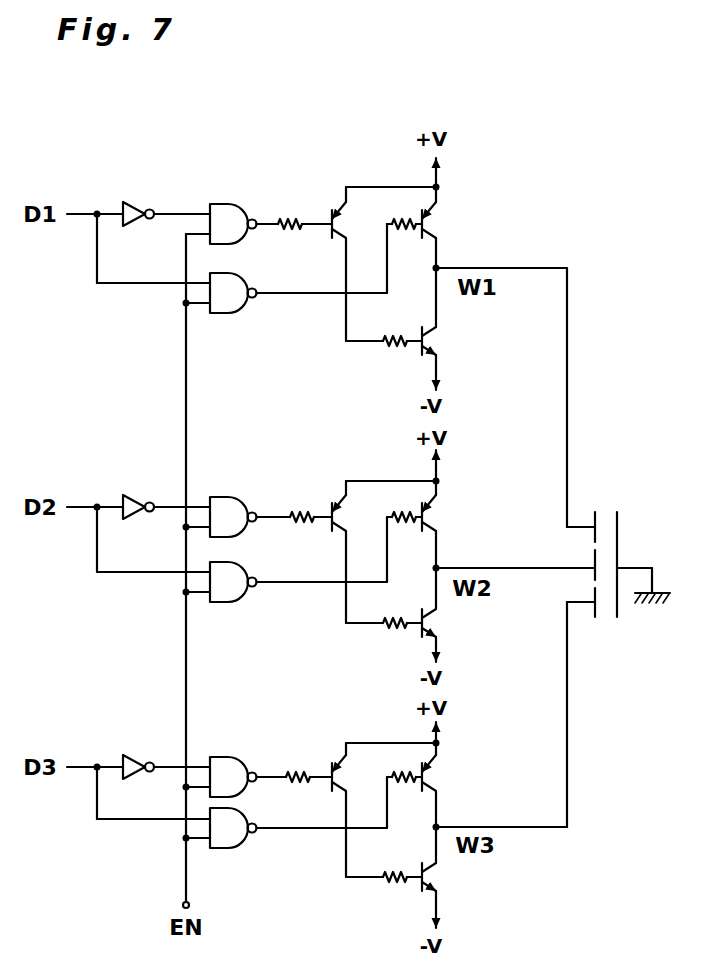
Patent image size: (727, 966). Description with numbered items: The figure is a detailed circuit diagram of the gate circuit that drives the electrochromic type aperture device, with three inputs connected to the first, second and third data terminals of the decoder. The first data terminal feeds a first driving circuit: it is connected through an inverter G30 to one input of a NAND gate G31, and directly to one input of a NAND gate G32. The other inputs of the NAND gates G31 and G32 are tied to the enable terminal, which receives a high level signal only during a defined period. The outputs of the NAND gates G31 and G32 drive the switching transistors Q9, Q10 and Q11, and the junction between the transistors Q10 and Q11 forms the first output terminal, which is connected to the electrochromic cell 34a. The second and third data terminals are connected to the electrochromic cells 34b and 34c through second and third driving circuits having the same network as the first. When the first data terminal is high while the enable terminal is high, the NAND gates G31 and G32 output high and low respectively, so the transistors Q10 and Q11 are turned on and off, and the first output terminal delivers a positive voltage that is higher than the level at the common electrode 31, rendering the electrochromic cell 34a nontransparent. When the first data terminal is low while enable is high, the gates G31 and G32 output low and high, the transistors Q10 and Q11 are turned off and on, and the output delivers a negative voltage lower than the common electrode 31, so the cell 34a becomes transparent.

The inverter G30 is at (141, 203).
The NAND gate G31 is at (226, 203).
The NAND gate G32 is at (229, 314).
The switching transistor Q9 is at (335, 211).
The switching transistor Q10 is at (438, 228).
The switching transistor Q11 is at (437, 342).
The electrochromic cell 34a is at (597, 511).
The electrochromic cell 34b is at (593, 553).
The electrochromic cell 34c is at (597, 619).
The common electrode 31 is at (646, 564).